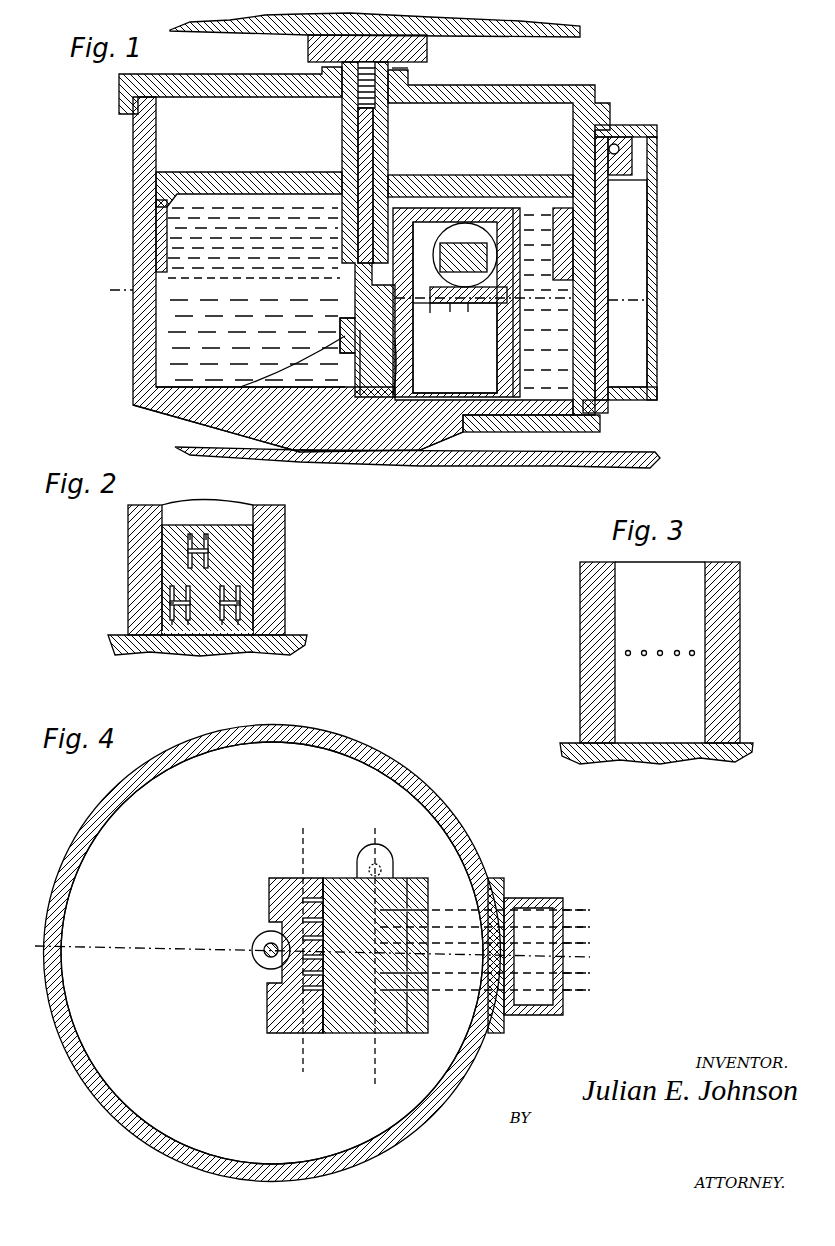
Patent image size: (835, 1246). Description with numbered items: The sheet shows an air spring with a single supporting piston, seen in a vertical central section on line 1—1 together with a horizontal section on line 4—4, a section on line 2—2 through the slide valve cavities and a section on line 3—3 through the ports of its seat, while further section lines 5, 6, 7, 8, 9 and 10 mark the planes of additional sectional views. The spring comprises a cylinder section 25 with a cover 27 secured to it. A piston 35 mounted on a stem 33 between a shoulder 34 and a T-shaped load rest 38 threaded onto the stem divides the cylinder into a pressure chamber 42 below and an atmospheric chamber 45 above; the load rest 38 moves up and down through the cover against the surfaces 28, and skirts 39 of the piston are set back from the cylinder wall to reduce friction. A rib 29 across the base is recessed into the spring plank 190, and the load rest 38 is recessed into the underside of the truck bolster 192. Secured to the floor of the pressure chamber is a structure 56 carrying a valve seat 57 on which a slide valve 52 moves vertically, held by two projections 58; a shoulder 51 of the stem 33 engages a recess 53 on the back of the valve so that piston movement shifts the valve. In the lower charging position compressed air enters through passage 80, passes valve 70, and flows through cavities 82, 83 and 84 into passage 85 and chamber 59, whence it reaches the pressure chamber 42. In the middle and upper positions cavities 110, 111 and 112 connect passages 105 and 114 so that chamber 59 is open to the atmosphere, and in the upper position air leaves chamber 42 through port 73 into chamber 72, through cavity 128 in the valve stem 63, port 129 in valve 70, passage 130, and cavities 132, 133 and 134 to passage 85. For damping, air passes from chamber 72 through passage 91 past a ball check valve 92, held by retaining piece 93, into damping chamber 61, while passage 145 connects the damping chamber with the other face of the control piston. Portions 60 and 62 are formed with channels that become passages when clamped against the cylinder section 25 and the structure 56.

In FIG. 4, the section line 1— 1 is at (315, 951).
In FIG. 4, the section line 2— 2 is at (297, 842).
In FIG. 4, the section line 3— 3 is at (310, 842).
In FIG. 1, the section line 4— 4 is at (680, 300).
In FIG. 4, the section line 5- 5 is at (375, 957).
In FIG. 4, the conduit 6 is at (584, 974).
In FIG. 4, the conduit 7 is at (584, 991).
In FIG. 4, the conduit 8 is at (584, 944).
In FIG. 4, the conduit 9 is at (584, 928).
In FIG. 4, the conduit 10 is at (588, 911).
In FIG. 1, the cylinder section 25 is at (140, 345).
In FIG. 2, the cylinder section 25 is at (296, 643).
In FIG. 3, the cylinder section 25 is at (656, 753).
In FIG. 4, the cylinder section 25 is at (97, 805).
In FIG. 1, the cover 27 is at (508, 88).
In FIG. 1, the surfaces 28 is at (420, 71).
In FIG. 1, the rib 29 is at (308, 452).
In FIG. 1, the stem 33 is at (372, 160).
In FIG. 4, the stem 33 is at (262, 946).
In FIG. 1, the shoulder 34 is at (352, 197).
In FIG. 1, the piston 35 is at (170, 179).
In FIG. 1, the T-shaped load rest 38 is at (307, 46).
In FIG. 1, the skirts 39 is at (160, 246).
In FIG. 1, the pressure chamber 42 is at (170, 379).
In FIG. 4, the pressure chamber 42 is at (108, 838).
In FIG. 1, the atmospheric chamber 45 is at (165, 133).
In FIG. 1, the shoulder 51 is at (210, 408).
In FIG. 4, the shoulder 51 is at (252, 958).
In FIG. 1, the slide valve 52 is at (386, 397).
In FIG. 4, the slide valve 52 is at (282, 926).
In FIG. 1, the recess 53 is at (360, 395).
In FIG. 1, the structure 56 is at (413, 378).
In FIG. 2, the structure 56 is at (285, 568).
In FIG. 3, the structure 56 is at (740, 605).
In FIG. 4, the structure 56 is at (272, 882).
In FIG. 2, the valve seat 57 is at (222, 502).
In FIG. 3, the valve seat 57 is at (690, 566).
In FIG. 4, the projections 58 is at (270, 913).
In FIG. 1, the chamber 59 is at (455, 380).
In FIG. 1, the portion 60 is at (655, 358).
In FIG. 4, the portion 60 is at (497, 884).
In FIG. 1, the damping chamber 61 is at (632, 332).
In FIG. 4, the damping chamber 61 is at (530, 905).
In FIG. 1, the portion 62 is at (490, 205).
In FIG. 1, the valve stem 63 is at (450, 247).
In FIG. 1, the valve 70 is at (470, 305).
In FIG. 1, the chamber 72 is at (410, 222).
In FIG. 1, the port 73 is at (462, 220).
In FIG. 3, the passage 80 is at (660, 656).
In FIG. 4, the passage 80 is at (283, 972).
In FIG. 1, the cavity 82 is at (393, 395).
In FIG. 2, the cavity 82 is at (205, 548).
In FIG. 2, the cavity 83 is at (208, 551).
In FIG. 2, the cavity 84 is at (190, 534).
In FIG. 3, the passage 85 is at (644, 650).
In FIG. 4, the passage 85 is at (268, 893).
In FIG. 1, the passage 91 is at (640, 166).
In FIG. 1, the ball check valve 92 is at (618, 143).
In FIG. 1, the retaining piece 93 is at (657, 133).
In FIG. 3, the passage 105 is at (677, 650).
In FIG. 4, the passage 105 is at (350, 980).
In FIG. 2, the cavity 110 is at (222, 622).
In FIG. 2, the cavity 111 is at (240, 603).
In FIG. 2, the cavity 112 is at (240, 630).
In FIG. 3, the passage 114 is at (692, 656).
In FIG. 4, the passage 114 is at (300, 990).
In FIG. 1, the cavity 128 is at (431, 306).
In FIG. 1, the port 129 is at (468, 318).
In FIG. 1, the passage 130 is at (452, 318).
In FIG. 3, the passage 130 is at (628, 656).
In FIG. 4, the passage 130 is at (320, 920).
In FIG. 2, the cavity 132 is at (173, 626).
In FIG. 2, the cavity 133 is at (170, 603).
In FIG. 2, the cavity 134 is at (189, 626).
In FIG. 4, the passage 145 is at (398, 890).
In FIG. 1, the spring plank 190 is at (655, 454).
In FIG. 1, the truck bolster 192 is at (568, 32).